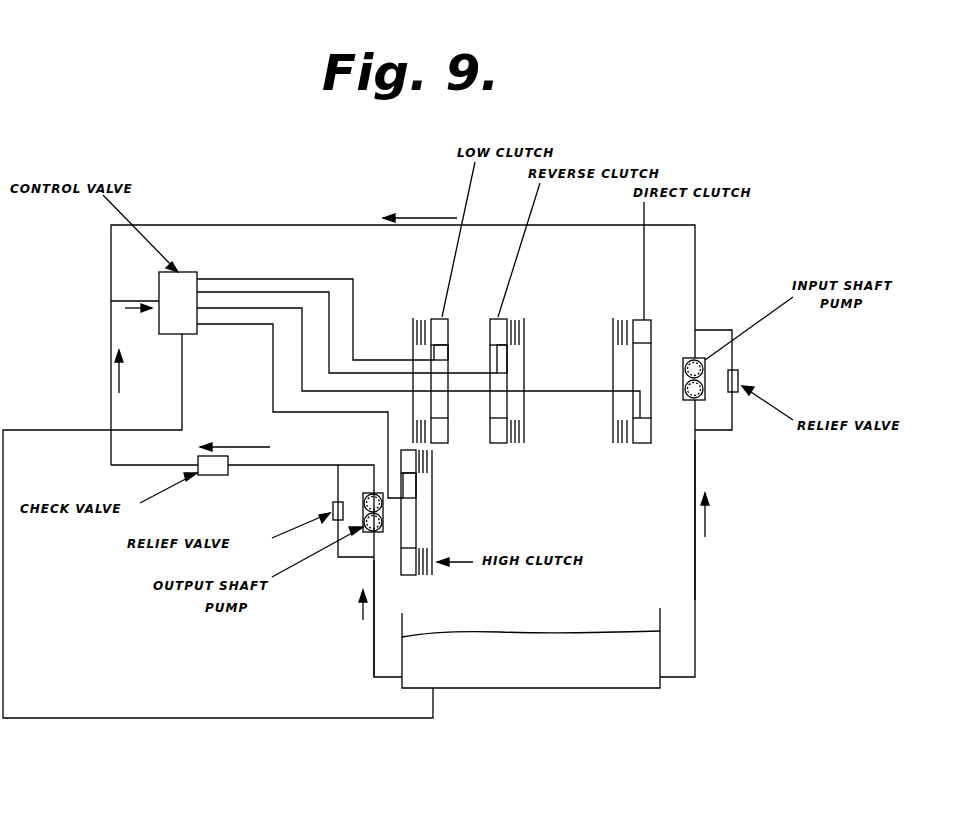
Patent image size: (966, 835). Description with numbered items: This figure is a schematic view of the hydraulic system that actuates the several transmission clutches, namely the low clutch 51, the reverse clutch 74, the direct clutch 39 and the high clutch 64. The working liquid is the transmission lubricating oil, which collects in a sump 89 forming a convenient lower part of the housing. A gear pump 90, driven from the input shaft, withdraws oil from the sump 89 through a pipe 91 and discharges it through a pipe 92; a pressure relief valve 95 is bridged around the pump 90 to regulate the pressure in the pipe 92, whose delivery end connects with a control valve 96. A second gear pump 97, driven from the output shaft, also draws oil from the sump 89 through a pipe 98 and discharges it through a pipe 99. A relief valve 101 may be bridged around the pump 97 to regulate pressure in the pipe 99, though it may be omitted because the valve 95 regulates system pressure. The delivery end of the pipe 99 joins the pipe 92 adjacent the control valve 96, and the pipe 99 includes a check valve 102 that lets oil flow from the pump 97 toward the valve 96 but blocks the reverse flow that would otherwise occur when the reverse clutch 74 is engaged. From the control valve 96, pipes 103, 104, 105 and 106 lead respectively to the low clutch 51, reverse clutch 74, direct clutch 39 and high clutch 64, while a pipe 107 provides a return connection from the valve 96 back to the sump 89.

The direct clutch 39 is at (623, 320).
The low clutch 51 is at (413, 317).
The high clutch 64 is at (422, 548).
The reverse clutch 74 is at (514, 316).
The sump 89 is at (568, 688).
The gear pump 90 is at (700, 400).
The pipe 91 is at (697, 563).
The pipe 92 is at (695, 247).
The pressure relief valve 95 is at (740, 372).
The control valve 96 is at (182, 277).
The gear pump 97 is at (367, 535).
The pipe 98 is at (372, 643).
The pipe 99 is at (300, 465).
The relief valve 101 is at (333, 503).
The check valve 102 is at (210, 476).
The pipe 103 is at (215, 279).
The pipe 104 is at (245, 292).
The pipe 105 is at (263, 308).
The pipe 106 is at (251, 324).
The pipe 107 is at (45, 410).